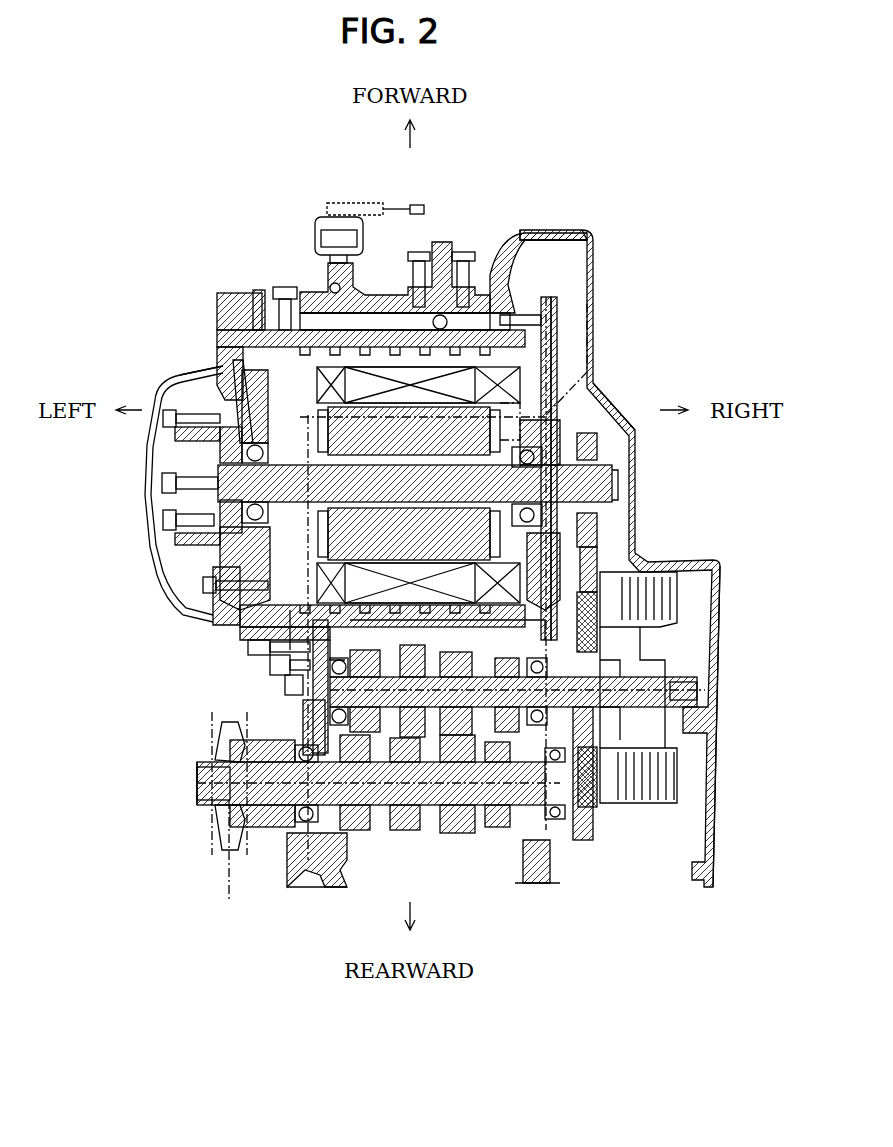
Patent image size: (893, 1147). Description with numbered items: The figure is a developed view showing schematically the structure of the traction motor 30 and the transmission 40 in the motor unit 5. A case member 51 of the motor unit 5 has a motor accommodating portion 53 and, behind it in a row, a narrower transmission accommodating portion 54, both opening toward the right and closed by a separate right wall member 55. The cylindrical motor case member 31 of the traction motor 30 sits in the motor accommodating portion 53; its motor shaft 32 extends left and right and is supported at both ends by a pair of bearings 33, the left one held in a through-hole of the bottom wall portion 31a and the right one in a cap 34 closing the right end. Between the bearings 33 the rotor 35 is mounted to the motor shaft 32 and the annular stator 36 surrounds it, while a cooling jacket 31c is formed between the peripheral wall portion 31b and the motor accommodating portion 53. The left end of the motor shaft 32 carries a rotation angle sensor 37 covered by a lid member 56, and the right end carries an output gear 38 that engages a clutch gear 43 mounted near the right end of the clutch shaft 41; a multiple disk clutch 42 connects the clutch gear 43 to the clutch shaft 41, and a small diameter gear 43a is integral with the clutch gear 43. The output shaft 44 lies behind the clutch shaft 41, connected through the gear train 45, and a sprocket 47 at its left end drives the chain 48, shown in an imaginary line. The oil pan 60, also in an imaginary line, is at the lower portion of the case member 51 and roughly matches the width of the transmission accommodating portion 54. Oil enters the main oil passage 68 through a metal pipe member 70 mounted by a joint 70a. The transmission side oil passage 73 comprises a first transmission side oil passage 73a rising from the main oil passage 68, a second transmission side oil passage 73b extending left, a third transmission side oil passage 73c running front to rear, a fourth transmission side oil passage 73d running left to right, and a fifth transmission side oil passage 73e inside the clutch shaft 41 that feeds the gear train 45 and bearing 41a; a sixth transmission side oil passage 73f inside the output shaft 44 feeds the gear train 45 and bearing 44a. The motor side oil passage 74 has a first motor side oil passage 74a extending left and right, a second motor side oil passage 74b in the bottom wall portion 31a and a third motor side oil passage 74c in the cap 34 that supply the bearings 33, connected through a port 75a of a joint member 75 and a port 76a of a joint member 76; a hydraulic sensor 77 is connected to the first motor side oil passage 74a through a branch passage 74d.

The motor unit 5 is at (653, 203).
The traction motor 30 is at (573, 373).
The motor case member 31 is at (250, 545).
The bottom wall portion 31a is at (318, 418).
The peripheral wall portion 31b is at (318, 390).
The cooling jacket 31c is at (360, 330).
The motor shaft 32 is at (618, 482).
The bearing 33 is at (245, 453).
The cap 34 is at (548, 397).
The rotor 35 is at (330, 522).
The stator 36 is at (350, 572).
The rotation angle sensor 37 is at (222, 515).
The output gear 38 is at (597, 520).
The transmission 40 is at (660, 831).
The clutch shaft 41 is at (697, 668).
The bearing 41a is at (600, 638).
The multiple disk clutch 42 is at (670, 615).
The clutch gear 43 is at (597, 570).
The small diameter gear 43a is at (590, 840).
The output shaft 44 is at (582, 810).
The bearing 44a is at (197, 778).
The gear train 45 is at (480, 833).
The sprocket 47 is at (218, 730).
The chain 48 is at (229, 878).
The case member 51 is at (214, 290).
The motor accommodating portion 53 is at (225, 365).
The transmission accommodating portion 54 is at (305, 860).
The right wall member 55 is at (635, 430).
The lid member 56 is at (162, 484).
The oil pan 60 is at (565, 400).
The main oil passage 68 is at (503, 300).
The metal pipe member 70 is at (436, 252).
The joint 70a is at (462, 252).
The transmission side oil passage 73 is at (306, 697).
The first transmission side oil passage 73a is at (215, 620).
The second transmission side oil passage 73b is at (245, 632).
The third transmission side oil passage 73c is at (250, 647).
The fourth transmission side oil passage 73d is at (272, 665).
The fifth transmission side oil passage 73e is at (300, 720).
The sixth transmission side oil passage 73f is at (205, 790).
The motor side oil passage 74 is at (395, 318).
The first motor side oil passage 74a is at (400, 320).
The second motor side oil passage 74b is at (238, 380).
The third motor side oil passage 74c is at (548, 363).
The branch passage 74d is at (258, 290).
The joint member 75 is at (232, 300).
The port 75a is at (282, 290).
The joint member 76 is at (545, 232).
The port 76a is at (588, 232).
The hydraulic sensor 77 is at (320, 240).